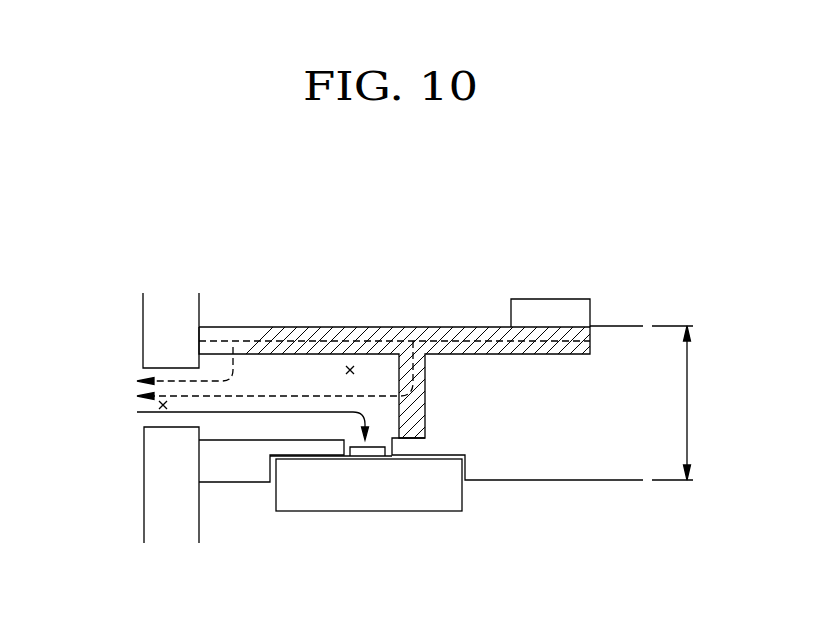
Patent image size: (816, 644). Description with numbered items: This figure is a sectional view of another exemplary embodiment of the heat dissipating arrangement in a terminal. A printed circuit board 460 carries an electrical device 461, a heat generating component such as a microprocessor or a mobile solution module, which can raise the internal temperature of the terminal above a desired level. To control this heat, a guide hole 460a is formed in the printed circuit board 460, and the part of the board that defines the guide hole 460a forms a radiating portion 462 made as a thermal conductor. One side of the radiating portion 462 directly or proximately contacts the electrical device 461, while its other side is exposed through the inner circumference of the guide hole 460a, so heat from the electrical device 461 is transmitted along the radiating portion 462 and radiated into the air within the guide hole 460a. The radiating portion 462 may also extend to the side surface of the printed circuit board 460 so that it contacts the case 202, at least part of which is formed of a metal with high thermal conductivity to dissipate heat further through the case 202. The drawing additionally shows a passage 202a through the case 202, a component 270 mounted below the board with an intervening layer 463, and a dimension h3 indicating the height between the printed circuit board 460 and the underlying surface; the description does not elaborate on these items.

The case 202 is at (153, 474).
The gas flow path / opening in substrate 202a is at (159, 404).
The chip / component body 270 is at (409, 502).
The printed circuit board 460 is at (567, 467).
The guide hole 460a is at (350, 366).
The electrical device 461 is at (548, 306).
The radiating portion 462 is at (258, 343).
The bonding layer / plate 463 is at (288, 458).
The height h3 is at (653, 403).